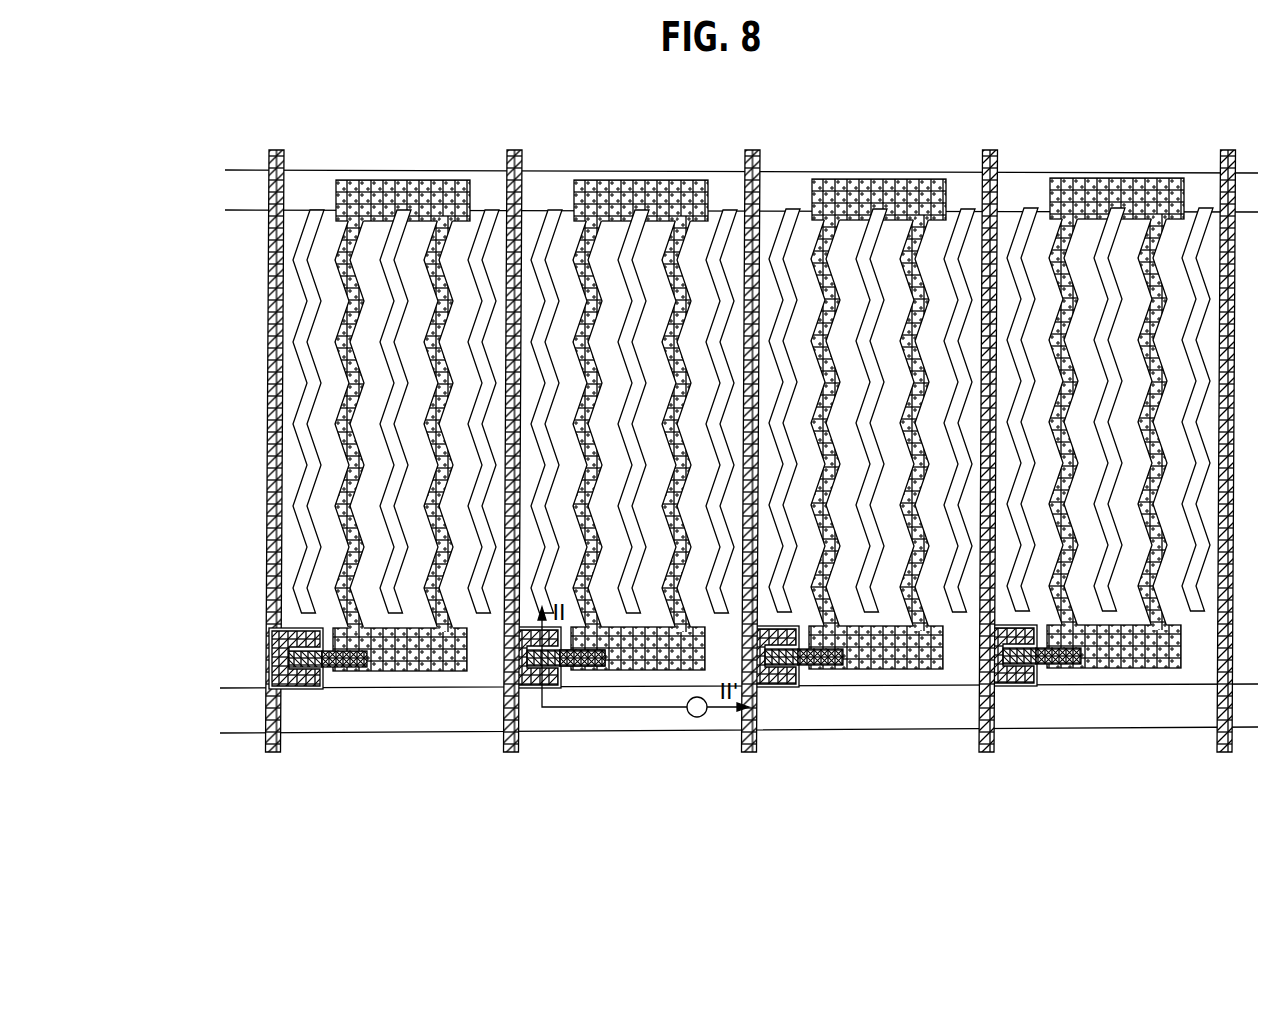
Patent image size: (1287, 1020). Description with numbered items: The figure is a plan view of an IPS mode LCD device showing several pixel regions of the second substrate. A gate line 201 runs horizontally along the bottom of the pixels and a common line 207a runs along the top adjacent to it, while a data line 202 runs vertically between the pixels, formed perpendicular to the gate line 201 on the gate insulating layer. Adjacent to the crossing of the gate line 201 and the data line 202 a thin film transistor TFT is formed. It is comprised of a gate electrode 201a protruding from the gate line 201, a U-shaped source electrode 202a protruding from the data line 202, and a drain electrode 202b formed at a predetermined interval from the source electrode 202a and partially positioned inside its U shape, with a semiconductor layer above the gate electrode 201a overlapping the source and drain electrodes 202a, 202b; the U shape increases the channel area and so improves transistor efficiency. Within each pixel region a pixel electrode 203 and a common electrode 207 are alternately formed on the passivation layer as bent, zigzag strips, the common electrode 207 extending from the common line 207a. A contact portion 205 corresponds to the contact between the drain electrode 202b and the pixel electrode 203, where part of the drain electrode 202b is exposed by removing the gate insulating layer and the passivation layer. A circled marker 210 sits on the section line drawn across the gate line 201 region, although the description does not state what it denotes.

The gate line 201 is at (448, 706).
The gate electrode 201a is at (300, 693).
The data line 202 is at (278, 148).
The source electrode 202a is at (298, 629).
The drain electrode 202b is at (327, 695).
The pixel electrode 203 is at (348, 367).
The contact portion 205 is at (593, 657).
The common electrode 207 is at (311, 313).
The common line 207a is at (486, 188).
The column spacer 210 is at (697, 717).
The thin film transistor TFT is at (284, 706).